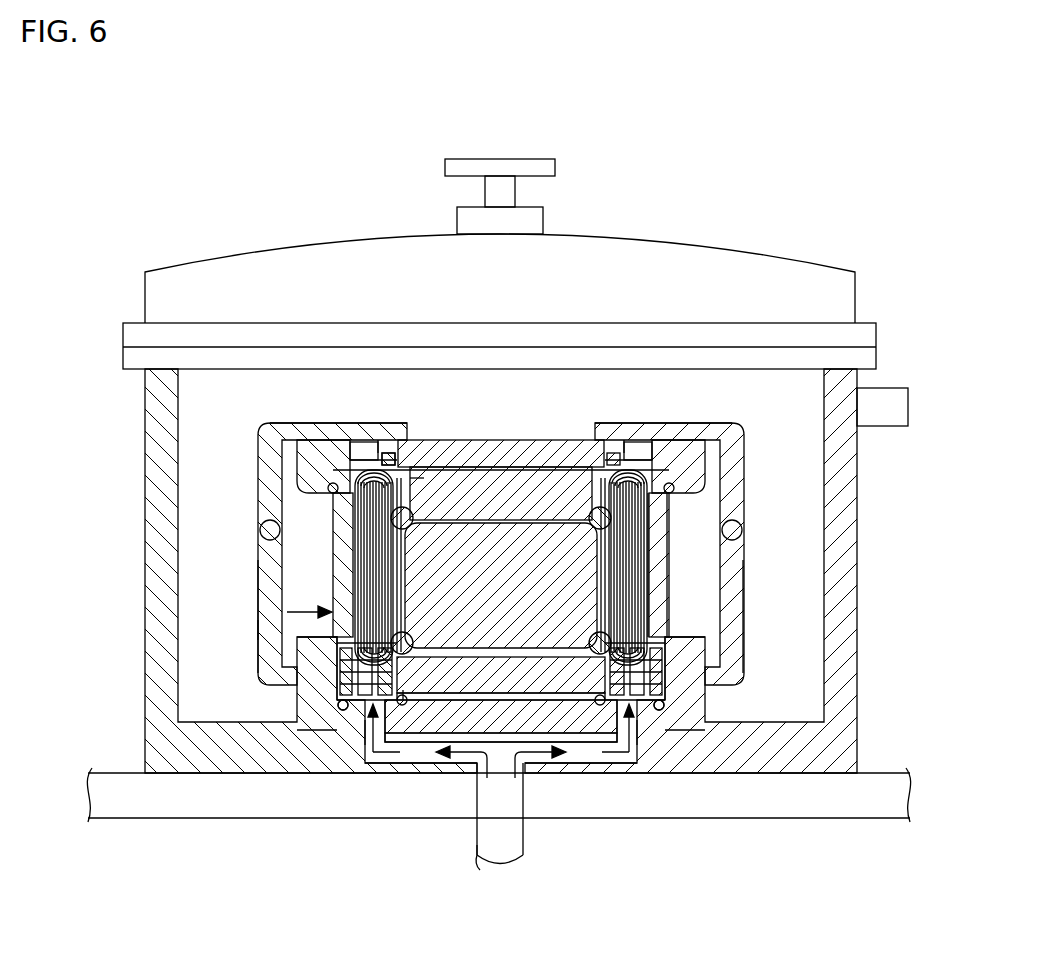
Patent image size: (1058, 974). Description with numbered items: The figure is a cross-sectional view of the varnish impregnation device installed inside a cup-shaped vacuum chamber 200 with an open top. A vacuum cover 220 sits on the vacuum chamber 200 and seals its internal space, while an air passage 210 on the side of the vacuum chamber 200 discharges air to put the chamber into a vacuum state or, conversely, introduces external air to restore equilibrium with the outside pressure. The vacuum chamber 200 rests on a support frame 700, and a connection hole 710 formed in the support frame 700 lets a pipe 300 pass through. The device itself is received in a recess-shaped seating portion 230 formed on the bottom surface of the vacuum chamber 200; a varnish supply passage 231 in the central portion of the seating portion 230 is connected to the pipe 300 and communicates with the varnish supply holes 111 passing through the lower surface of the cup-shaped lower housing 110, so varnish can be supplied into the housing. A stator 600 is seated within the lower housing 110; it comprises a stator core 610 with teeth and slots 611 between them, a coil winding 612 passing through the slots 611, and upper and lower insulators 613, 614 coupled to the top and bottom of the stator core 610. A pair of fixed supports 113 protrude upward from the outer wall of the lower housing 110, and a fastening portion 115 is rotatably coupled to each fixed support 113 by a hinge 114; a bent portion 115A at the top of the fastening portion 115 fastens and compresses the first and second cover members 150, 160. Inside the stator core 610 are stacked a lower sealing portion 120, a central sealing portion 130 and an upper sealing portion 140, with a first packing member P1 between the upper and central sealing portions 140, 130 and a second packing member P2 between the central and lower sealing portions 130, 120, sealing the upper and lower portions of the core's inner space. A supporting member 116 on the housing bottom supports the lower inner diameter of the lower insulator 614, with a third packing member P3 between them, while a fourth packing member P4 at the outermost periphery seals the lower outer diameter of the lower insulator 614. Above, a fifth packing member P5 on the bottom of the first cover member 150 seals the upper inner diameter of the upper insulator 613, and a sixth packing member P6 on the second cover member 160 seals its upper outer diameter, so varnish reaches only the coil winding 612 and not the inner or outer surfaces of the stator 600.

The vacuum chamber 200 is at (858, 520).
The air passage 210 is at (889, 400).
The vacuum cover 220 is at (691, 252).
The support frame 700 is at (178, 800).
The pipe 300 is at (525, 860).
The connection hole 710 is at (477, 858).
The fastening portion 115 is at (268, 465).
The bent portion 115A is at (320, 424).
The fixed support 113 is at (258, 606).
The hinge 114 is at (263, 528).
The second cover member 160 is at (330, 455).
The fifth packing member P5 is at (390, 455).
The coil winding 612 is at (385, 520).
The slot 611 is at (390, 602).
The upper insulator 613 is at (604, 458).
The stator core 610 is at (745, 620).
The stator 600 is at (258, 617).
The sixth packing member P6 is at (350, 484).
The first cover member 150 is at (495, 452).
The upper sealing portion 140 is at (548, 470).
The first packing member P1 is at (424, 478).
The central sealing portion 130 is at (485, 620).
The lower sealing portion 120 is at (432, 660).
The lower insulator 614 is at (690, 700).
The varnish supply hole 111 is at (345, 712).
The lower housing 110 is at (297, 705).
The supporting member 116 is at (533, 735).
The varnish supply passage 231 is at (378, 745).
The seating portion 230 is at (266, 762).
The fourth packing member P4 is at (365, 752).
The third packing member P3 is at (625, 750).
The second packing member P2 is at (410, 702).